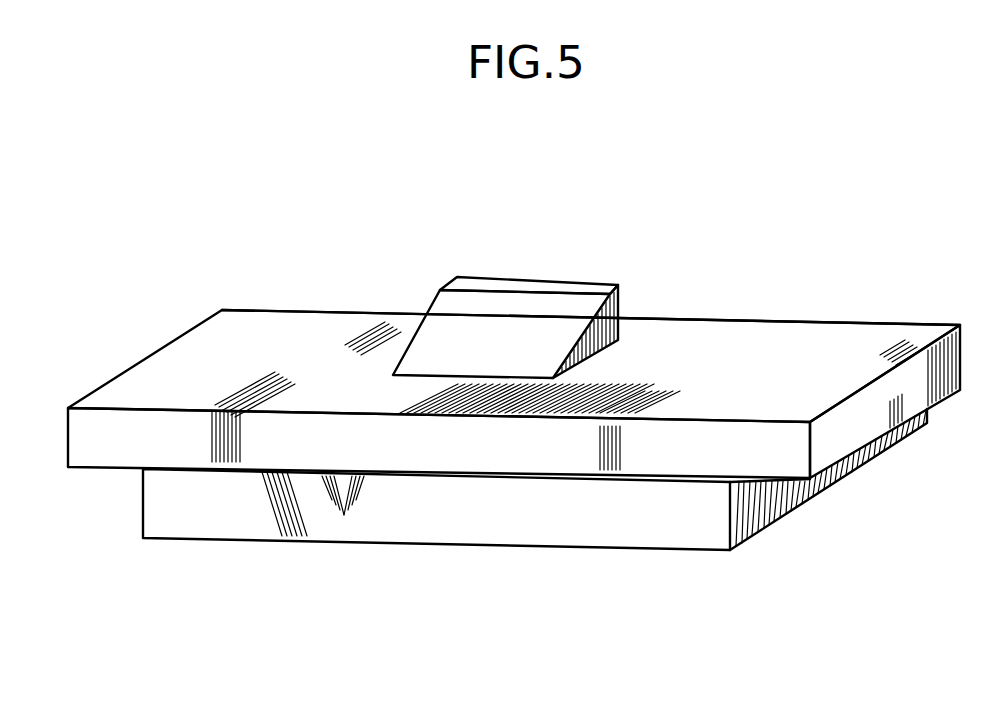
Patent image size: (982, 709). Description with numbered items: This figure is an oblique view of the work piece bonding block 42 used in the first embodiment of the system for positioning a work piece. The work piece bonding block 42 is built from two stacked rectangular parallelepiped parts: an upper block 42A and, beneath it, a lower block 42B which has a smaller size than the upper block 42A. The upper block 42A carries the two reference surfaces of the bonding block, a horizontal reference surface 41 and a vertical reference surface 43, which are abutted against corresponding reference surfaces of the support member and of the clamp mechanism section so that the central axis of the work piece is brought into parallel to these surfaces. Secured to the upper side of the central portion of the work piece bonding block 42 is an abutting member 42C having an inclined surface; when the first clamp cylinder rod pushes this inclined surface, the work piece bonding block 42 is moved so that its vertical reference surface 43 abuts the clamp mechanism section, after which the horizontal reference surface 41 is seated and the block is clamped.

The horizontal reference surface 41 is at (880, 438).
The work piece bonding block 42 is at (514, 421).
The upper block 42A is at (267, 335).
The lower block 42B is at (412, 522).
The abutting member 42C is at (543, 308).
The vertical reference surface 43 is at (858, 322).